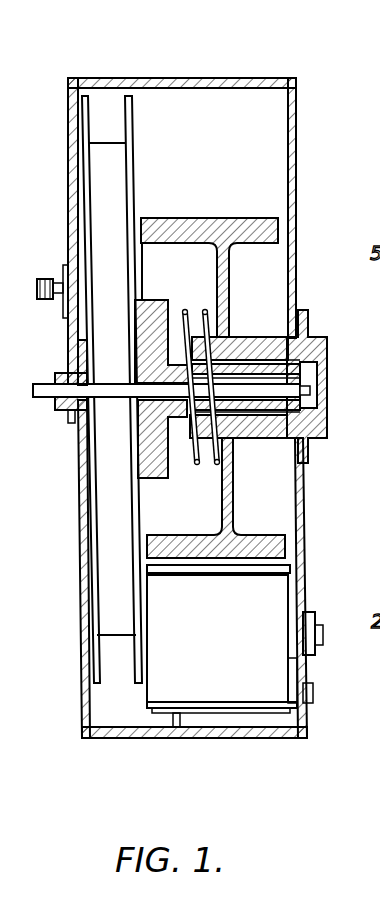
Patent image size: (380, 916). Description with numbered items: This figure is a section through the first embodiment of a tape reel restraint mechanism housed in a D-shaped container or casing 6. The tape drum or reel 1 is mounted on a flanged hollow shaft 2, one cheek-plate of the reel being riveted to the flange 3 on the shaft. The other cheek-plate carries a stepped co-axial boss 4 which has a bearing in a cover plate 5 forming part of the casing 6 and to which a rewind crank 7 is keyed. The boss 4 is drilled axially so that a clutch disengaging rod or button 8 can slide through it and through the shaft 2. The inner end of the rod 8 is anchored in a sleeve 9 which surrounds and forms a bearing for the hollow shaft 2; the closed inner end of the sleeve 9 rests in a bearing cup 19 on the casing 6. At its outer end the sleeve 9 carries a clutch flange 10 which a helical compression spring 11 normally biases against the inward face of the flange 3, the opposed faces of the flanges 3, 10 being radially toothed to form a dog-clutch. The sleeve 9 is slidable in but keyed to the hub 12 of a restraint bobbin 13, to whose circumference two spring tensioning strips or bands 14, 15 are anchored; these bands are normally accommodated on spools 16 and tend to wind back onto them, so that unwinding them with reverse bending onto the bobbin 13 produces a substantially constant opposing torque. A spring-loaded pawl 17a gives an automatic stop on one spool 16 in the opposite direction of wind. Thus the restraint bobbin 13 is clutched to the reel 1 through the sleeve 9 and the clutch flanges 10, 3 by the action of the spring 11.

The tape drum or reel 1 is at (85, 151).
The flanged hollow shaft 2 is at (262, 402).
The flange 3 is at (140, 463).
The stepped co-axial boss 4 is at (72, 408).
The cover plate 5 is at (80, 560).
The D-shaped container or casing 6 is at (228, 80).
The rewind crank 7 is at (68, 328).
The clutch disengaging rod or button 8 is at (45, 389).
The sleeve 9 is at (267, 345).
The clutch flange 10 is at (171, 318).
The helical compression spring 11 is at (189, 312).
The hub 12 is at (238, 346).
The restraint bobbin 13 is at (262, 218).
The spring tensioning strip or band 14 is at (218, 569).
The spring tensioning strip or band 15 is at (268, 566).
The spool 16 is at (243, 690).
The pawl 17a is at (176, 716).
The bearing cup 19 is at (318, 343).